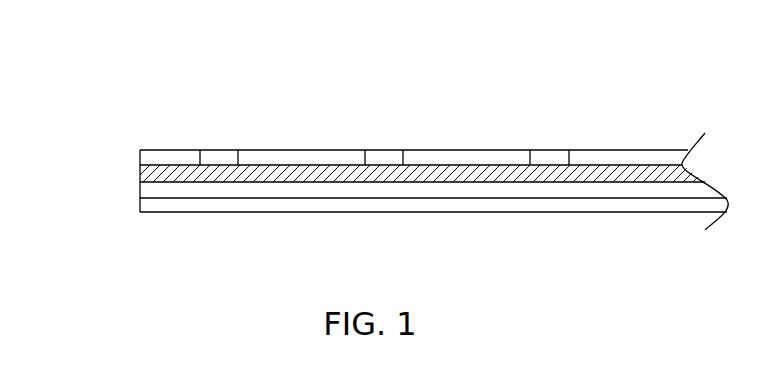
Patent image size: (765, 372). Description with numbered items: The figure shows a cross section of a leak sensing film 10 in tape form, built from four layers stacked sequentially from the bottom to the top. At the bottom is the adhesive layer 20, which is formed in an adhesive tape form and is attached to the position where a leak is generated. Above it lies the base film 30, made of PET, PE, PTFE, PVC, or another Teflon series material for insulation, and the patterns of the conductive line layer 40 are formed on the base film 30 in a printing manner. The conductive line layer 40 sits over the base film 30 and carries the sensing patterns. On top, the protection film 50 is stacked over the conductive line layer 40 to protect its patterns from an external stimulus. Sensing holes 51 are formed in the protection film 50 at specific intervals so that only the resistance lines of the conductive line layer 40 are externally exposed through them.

The leak sensing film 10 is at (552, 108).
The adhesive layer 20 is at (152, 205).
The base film 30 is at (152, 188).
The conductive line layer 40 is at (145, 170).
The protection film 50 is at (145, 157).
The sensing holes 51 is at (387, 158).